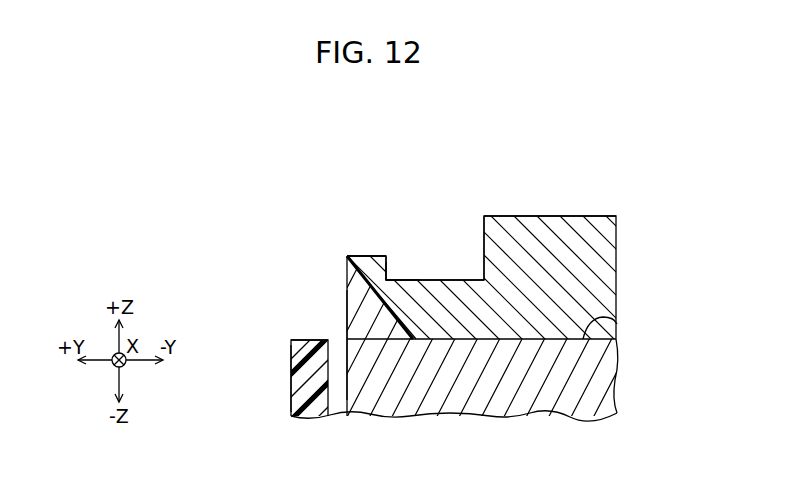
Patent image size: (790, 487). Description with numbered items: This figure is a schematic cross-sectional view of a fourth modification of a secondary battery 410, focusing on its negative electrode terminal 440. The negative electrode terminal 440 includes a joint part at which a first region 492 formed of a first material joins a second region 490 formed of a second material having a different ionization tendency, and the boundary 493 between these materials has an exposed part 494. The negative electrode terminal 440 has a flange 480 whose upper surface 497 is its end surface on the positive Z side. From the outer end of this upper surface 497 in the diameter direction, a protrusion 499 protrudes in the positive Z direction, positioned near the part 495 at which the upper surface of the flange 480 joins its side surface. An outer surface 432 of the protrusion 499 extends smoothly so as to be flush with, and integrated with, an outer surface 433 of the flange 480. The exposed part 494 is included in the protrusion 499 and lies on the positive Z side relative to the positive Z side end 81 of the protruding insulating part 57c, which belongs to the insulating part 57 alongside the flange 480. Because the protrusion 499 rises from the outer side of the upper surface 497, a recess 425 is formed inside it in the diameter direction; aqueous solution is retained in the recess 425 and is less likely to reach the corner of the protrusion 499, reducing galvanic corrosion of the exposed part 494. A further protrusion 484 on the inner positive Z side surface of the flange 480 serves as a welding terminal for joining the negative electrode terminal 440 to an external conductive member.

The secondary battery 410 is at (567, 153).
The negative electrode terminal 440 is at (583, 215).
The second region 490 is at (522, 400).
The protrusion 484 is at (500, 216).
The first region 492 is at (532, 216).
The upper surface 497 is at (452, 280).
The recess 425 is at (405, 280).
The boundary 493 is at (617, 322).
The part 495 is at (346, 280).
The outer surface 433 is at (346, 300).
The exposed part 494 is at (346, 256).
The protrusion 499 is at (368, 256).
The outer surface 432 is at (346, 262).
The flange 480 is at (336, 367).
The insulating part 57 is at (291, 376).
The protruding insulating part 57c is at (302, 397).
The +Z side end 81 is at (305, 340).